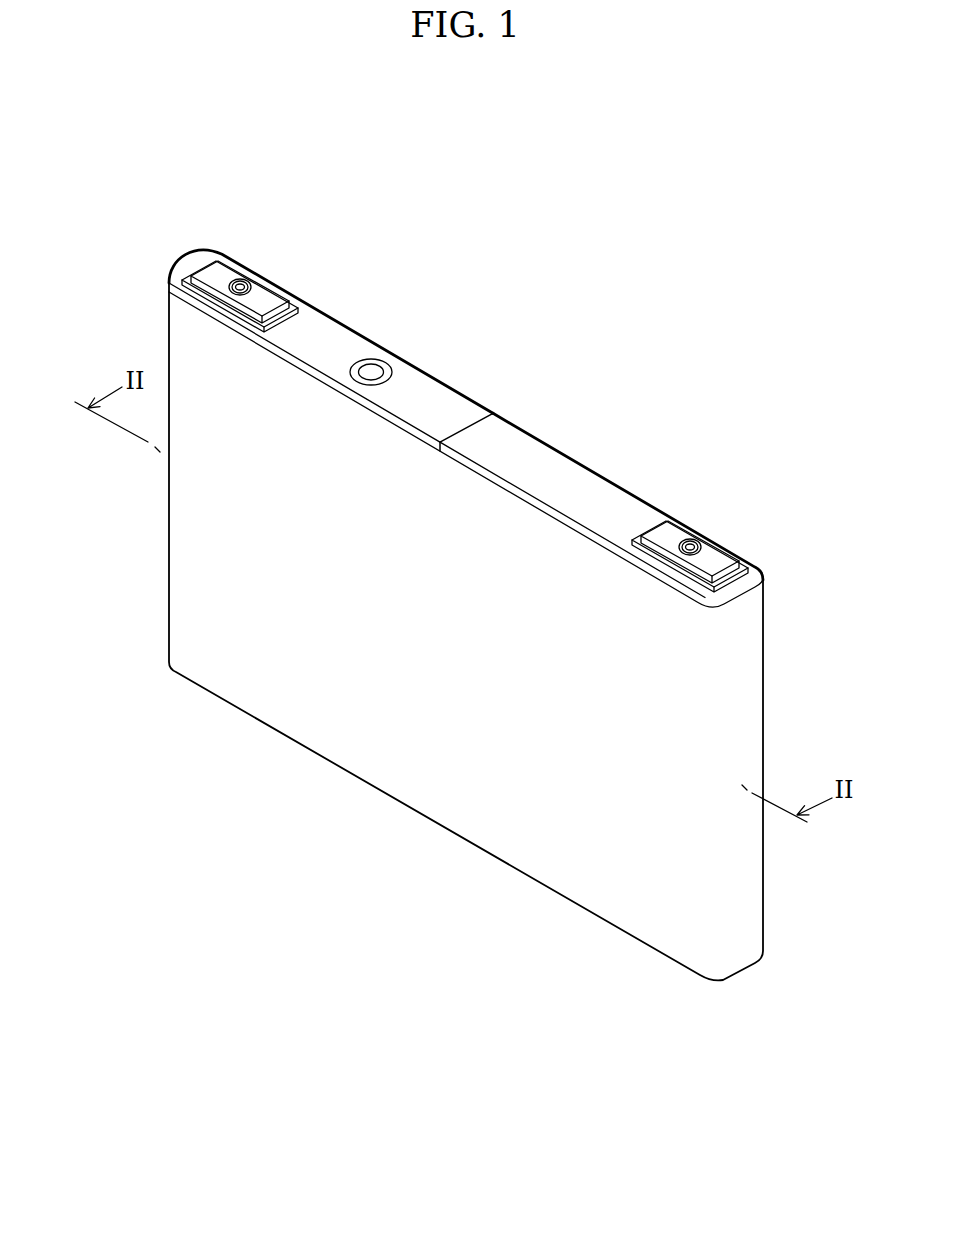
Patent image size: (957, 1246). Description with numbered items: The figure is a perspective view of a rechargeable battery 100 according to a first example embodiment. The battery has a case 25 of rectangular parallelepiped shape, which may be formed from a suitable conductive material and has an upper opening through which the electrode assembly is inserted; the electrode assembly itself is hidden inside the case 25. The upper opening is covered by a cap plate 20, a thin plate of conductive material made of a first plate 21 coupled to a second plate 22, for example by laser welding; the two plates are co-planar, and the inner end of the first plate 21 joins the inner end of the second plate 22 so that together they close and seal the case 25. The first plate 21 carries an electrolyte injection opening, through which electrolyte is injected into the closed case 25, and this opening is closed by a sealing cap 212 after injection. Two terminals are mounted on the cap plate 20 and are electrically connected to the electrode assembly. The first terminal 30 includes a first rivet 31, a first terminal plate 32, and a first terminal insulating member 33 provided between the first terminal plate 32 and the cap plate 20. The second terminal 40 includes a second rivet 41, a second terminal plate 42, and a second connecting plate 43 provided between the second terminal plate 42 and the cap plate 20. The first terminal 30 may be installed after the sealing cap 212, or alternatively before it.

The rechargeable battery 100 is at (503, 185).
The cap plate 20 is at (474, 328).
The first plate 21 is at (453, 400).
The second plate 22 is at (562, 470).
The sealing cap 212 is at (374, 366).
The case 25 is at (421, 782).
The first terminal 30 is at (257, 206).
The first rivet 31 is at (241, 279).
The first terminal plate 32 is at (263, 288).
The first terminal insulating member 33 is at (296, 305).
The second terminal 40 is at (798, 511).
The second rivet 41 is at (691, 540).
The second terminal plate 42 is at (714, 548).
The second connecting plate 43 is at (746, 566).